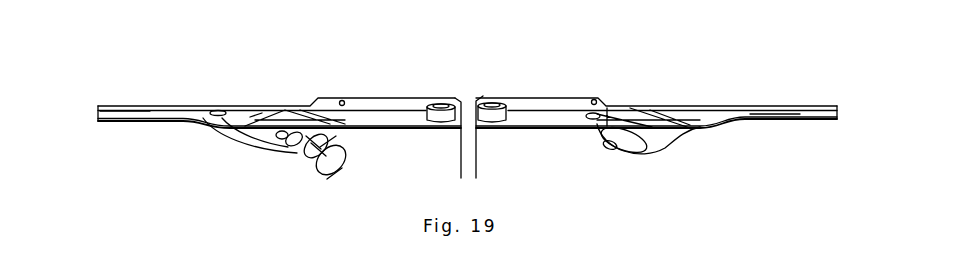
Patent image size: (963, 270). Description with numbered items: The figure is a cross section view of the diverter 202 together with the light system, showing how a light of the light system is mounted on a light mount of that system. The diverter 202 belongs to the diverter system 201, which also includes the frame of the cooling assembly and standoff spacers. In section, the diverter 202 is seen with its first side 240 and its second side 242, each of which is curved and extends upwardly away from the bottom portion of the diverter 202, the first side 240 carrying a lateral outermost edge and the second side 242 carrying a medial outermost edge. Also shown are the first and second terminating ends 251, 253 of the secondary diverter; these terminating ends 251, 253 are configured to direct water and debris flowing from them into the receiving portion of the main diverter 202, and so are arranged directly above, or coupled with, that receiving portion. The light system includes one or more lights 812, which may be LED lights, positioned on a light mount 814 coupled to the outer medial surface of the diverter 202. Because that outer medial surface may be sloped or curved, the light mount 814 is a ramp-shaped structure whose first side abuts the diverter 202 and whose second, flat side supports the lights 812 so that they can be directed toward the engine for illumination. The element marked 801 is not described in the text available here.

The diverter system 201 is at (292, 57).
The diverter 202 is at (699, 106).
The second side 242 is at (300, 120).
The first terminating end 251 is at (98, 120).
The second terminating end 253 is at (840, 118).
The first side 240 is at (726, 126).
The fitting housing 801 is at (335, 140).
The light 812 is at (315, 178).
The light mount 814 is at (297, 153).